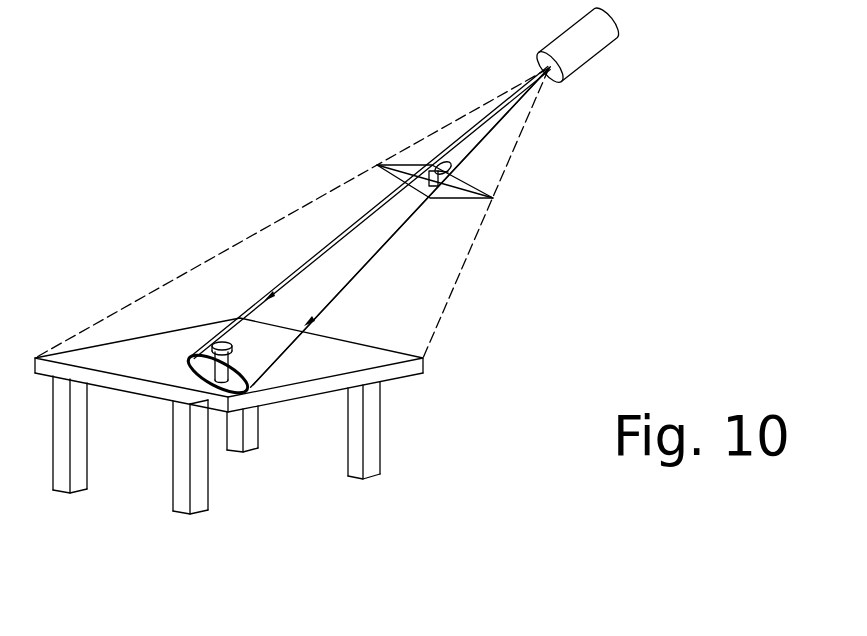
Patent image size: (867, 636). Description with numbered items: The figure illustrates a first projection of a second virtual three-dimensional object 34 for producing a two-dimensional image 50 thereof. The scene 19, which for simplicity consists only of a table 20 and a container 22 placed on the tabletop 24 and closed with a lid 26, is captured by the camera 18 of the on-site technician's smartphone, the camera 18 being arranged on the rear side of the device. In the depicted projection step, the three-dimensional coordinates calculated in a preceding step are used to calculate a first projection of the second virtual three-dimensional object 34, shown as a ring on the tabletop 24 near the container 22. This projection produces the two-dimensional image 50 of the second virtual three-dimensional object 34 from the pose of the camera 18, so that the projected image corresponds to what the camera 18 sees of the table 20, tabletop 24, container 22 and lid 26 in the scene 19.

The camera 18 is at (588, 50).
The scene 19 is at (132, 218).
The table 20 is at (375, 437).
The container 22 is at (205, 357).
The tabletop 24 is at (98, 353).
The lid 26 is at (222, 342).
The second virtual 3D object 34 is at (205, 357).
The 2D image 50 is at (473, 175).